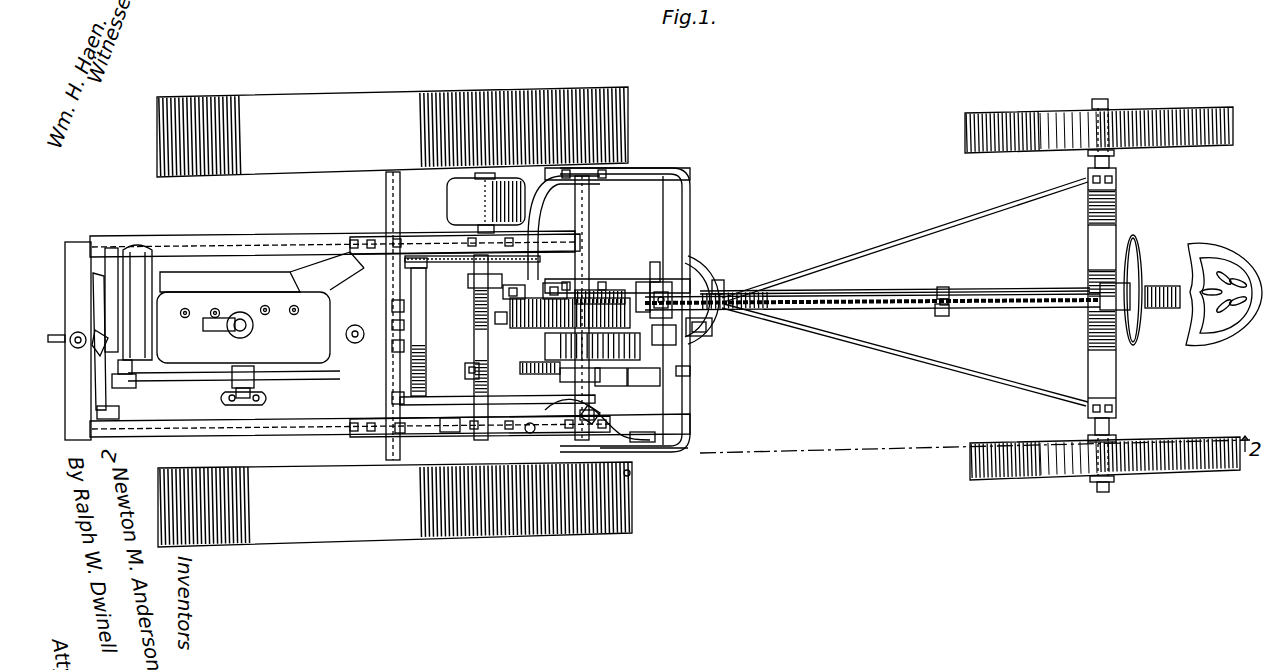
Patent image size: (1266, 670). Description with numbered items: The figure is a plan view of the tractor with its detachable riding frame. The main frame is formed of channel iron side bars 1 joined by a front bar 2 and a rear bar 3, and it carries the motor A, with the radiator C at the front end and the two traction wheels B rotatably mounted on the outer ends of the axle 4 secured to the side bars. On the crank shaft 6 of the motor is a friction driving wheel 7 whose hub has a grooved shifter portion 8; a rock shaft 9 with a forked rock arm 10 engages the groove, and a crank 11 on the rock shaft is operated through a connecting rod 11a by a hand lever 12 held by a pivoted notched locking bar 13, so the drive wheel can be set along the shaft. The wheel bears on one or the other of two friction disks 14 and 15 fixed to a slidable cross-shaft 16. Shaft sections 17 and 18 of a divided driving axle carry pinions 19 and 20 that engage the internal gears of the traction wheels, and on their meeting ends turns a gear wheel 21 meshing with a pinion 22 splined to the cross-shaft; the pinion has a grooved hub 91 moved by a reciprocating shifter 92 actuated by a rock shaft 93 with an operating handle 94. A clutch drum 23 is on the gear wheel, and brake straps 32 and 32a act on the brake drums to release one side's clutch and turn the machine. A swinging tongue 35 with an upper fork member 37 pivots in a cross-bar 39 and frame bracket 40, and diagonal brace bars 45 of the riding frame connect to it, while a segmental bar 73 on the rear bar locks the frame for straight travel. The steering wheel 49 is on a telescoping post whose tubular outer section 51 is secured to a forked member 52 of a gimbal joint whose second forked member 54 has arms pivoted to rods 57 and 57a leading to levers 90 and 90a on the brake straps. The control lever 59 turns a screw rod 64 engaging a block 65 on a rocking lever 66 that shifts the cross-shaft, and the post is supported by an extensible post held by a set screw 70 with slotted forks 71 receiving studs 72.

The motor A is at (205, 300).
The traction wheels B is at (318, 97).
The radiator C is at (82, 250).
The side bars 1 is at (305, 236).
The front bar 2 is at (100, 420).
The rear bar 3 is at (690, 228).
The axle 4 is at (386, 197).
The crank shaft 6 is at (392, 325).
The friction driving wheel 7 is at (416, 258).
The grooved shifter portion 8 is at (392, 306).
The rock shaft 9 is at (392, 398).
The forked rock arm 10 is at (392, 346).
The crank 11 is at (393, 427).
The connecting rod 11a is at (448, 428).
The hand lever 12 is at (640, 432).
The pivoted notched locking bar 13 is at (638, 456).
The friction disk 14 is at (478, 400).
The friction disk 15 is at (470, 278).
The cross-shaft 16 is at (468, 284).
The shaft section 17 is at (594, 415).
The shaft section 18 is at (590, 246).
The pinion 19 is at (625, 478).
The pinion 20 is at (620, 170).
The gear wheel 21 is at (606, 380).
The pinion 22 is at (488, 340).
The clutch drum 23 is at (447, 197).
The brake strap 32 is at (578, 380).
The brake strap 32a is at (587, 291).
The swinging tongue 35 is at (972, 294).
The upper fork member 37 is at (742, 296).
The cross-bar 39 is at (668, 205).
The frame bracket 40 is at (700, 332).
The diagonal brace bars 45 is at (1000, 210).
The steering wheel 49 is at (1137, 246).
The tubular outer section 51 is at (1048, 296).
The forked member 52 is at (693, 286).
The second forked member 54 is at (660, 282).
The rod 57 is at (701, 326).
The rod 57a is at (655, 262).
The control lever 59 is at (1147, 290).
The screw rod 64 is at (550, 290).
The block 65 is at (528, 296).
The rocking lever 66 is at (572, 354).
The set screw 70 is at (950, 312).
The slotted forks 71 is at (943, 288).
The studs 72 is at (943, 316).
The segmental bar 73 is at (720, 280).
The lever 90 is at (664, 340).
The lever 90a is at (642, 282).
The grooved hub 91 is at (493, 318).
The reciprocating shifter 92 is at (466, 372).
The rock shaft 93 is at (646, 380).
The operating handle 94 is at (688, 372).